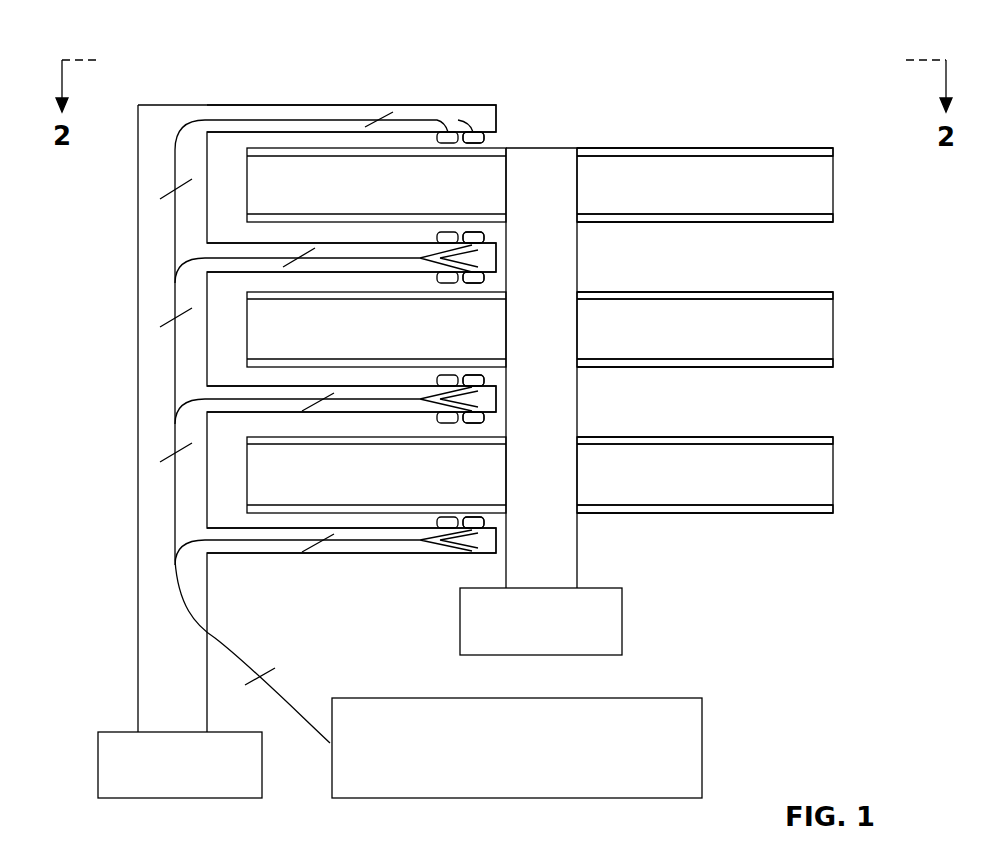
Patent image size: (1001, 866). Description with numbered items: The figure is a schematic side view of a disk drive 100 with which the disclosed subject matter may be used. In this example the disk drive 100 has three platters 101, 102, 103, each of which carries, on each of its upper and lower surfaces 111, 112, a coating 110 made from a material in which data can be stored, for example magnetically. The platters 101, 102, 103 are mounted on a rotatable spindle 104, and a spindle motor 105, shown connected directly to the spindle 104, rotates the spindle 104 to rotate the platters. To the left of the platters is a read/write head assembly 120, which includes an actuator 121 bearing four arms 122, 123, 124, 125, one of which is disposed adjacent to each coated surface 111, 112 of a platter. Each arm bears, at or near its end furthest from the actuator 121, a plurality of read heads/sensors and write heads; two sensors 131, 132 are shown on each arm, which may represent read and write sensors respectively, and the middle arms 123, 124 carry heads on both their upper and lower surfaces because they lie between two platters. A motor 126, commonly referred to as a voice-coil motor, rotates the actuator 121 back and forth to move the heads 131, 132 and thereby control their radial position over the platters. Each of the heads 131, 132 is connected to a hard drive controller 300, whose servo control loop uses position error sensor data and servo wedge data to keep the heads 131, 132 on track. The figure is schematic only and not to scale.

The disk drive 100 is at (182, 62).
The platter 101 is at (835, 183).
The platter 102 is at (835, 329).
The platter 103 is at (835, 474).
The spindle 104 is at (550, 152).
The spindle motor 105 is at (622, 620).
The coating 110 is at (835, 151).
The upper surface 111 is at (655, 148).
The lower surface 112 is at (655, 222).
The read/write head assembly 120 is at (126, 236).
The actuator 121 is at (138, 340).
The arm 122 is at (317, 104).
The arm 123 is at (334, 242).
The arm 124 is at (331, 385).
The arm 125 is at (331, 527).
The voice-coil motor 126 is at (138, 732).
The read head/sensor 131 is at (474, 143).
The write head 132 is at (447, 143).
The hard drive controller 300 is at (401, 698).